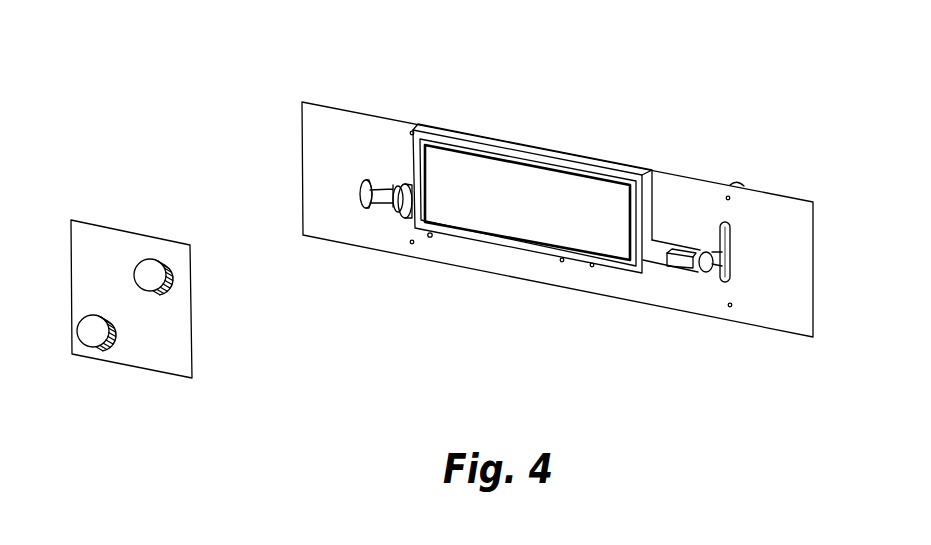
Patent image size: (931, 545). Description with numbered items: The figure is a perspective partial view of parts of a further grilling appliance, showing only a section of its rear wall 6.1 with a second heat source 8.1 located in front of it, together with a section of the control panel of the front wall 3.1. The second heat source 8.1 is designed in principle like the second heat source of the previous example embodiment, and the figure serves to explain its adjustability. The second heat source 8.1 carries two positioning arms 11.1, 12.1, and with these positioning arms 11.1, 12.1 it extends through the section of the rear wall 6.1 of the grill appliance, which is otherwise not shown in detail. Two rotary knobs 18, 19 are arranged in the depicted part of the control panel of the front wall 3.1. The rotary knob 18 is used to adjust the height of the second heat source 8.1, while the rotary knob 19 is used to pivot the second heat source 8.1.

The front wall 3.1 is at (176, 346).
The rotary knob 18 is at (154, 256).
The rotary knob 19 is at (89, 306).
The rear wall 6.1 is at (354, 162).
The second heat source 8.1 is at (470, 206).
The positioning arm 12.1 is at (400, 183).
The positioning arm 11.1 is at (713, 241).